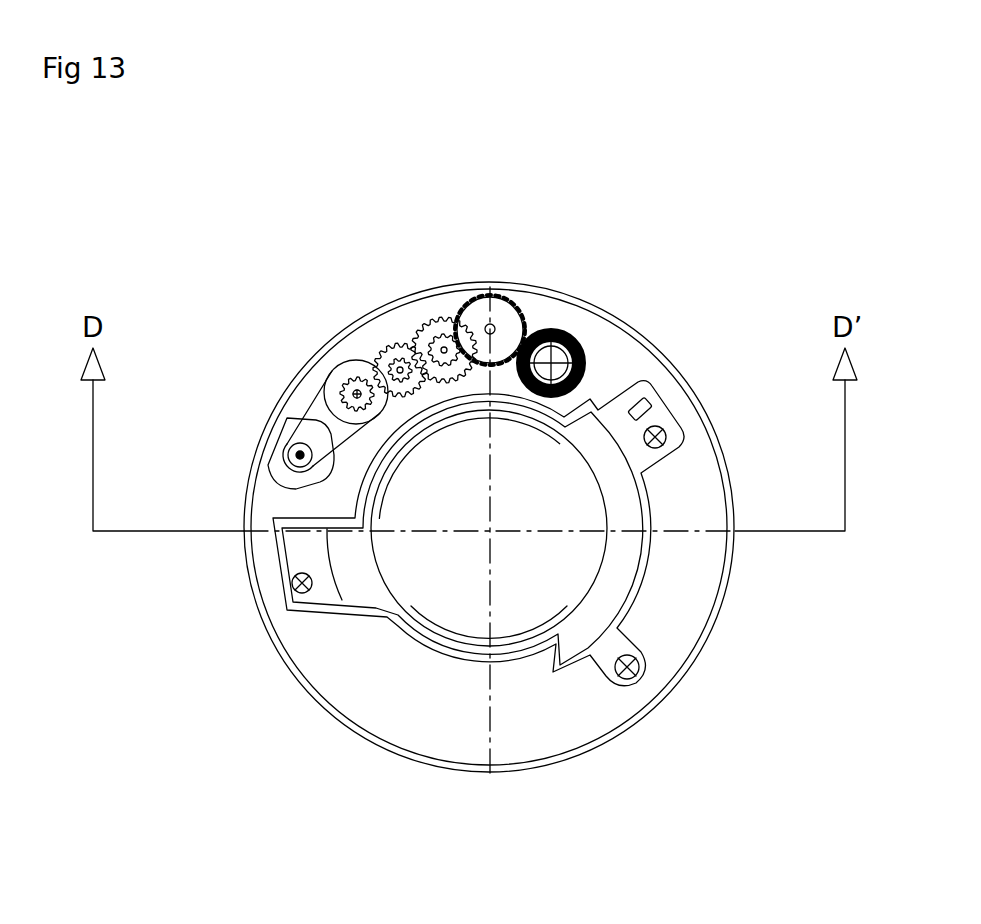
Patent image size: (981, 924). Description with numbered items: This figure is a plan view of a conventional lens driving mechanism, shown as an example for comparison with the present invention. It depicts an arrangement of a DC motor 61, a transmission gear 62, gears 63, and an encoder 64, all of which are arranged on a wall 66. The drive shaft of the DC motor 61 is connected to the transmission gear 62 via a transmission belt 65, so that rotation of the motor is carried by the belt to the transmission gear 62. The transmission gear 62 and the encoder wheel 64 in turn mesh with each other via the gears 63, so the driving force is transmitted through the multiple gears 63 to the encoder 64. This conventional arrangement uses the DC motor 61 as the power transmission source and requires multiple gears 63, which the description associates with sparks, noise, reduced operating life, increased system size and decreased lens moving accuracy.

The DC motor 61 is at (287, 405).
The transmission gear 62 is at (342, 363).
The gears 63 is at (491, 272).
The encoder 64 is at (597, 357).
The transmission belt 65 is at (300, 443).
The wall 66 is at (727, 634).